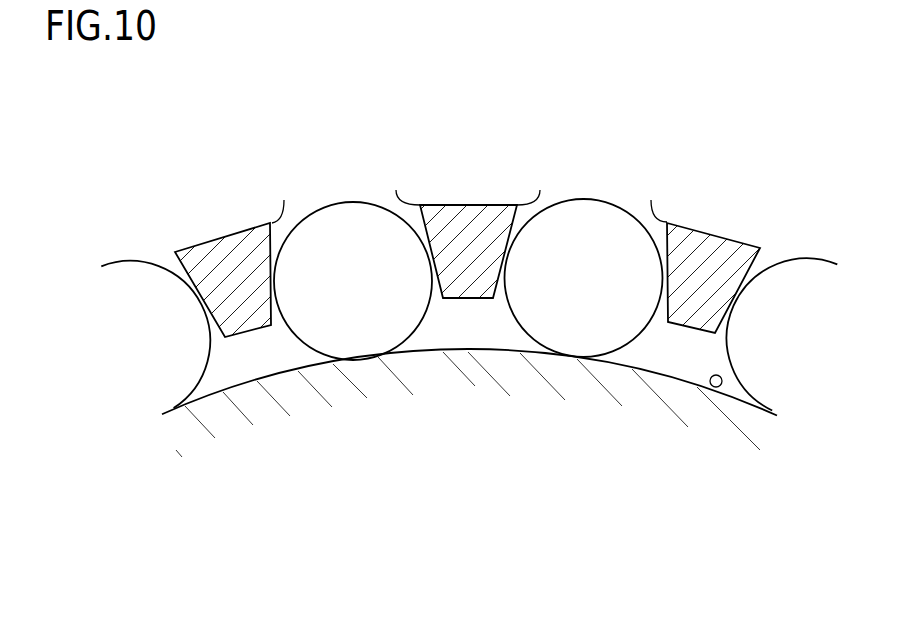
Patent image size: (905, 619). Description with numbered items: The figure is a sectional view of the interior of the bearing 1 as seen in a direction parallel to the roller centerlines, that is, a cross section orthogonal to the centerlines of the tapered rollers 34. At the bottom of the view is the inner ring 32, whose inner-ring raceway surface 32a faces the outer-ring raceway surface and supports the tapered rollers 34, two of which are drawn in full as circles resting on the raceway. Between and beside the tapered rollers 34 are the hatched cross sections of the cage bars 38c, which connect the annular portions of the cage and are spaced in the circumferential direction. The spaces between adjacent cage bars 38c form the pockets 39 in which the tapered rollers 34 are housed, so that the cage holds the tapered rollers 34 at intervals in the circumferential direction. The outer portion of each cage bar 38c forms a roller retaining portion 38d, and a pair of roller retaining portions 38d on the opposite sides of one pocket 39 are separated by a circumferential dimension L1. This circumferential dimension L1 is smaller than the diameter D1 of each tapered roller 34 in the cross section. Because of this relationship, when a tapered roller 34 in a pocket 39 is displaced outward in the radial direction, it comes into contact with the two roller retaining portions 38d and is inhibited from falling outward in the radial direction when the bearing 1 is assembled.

The rolling bearing 1 is at (183, 472).
The inner ring 32 is at (448, 367).
The inner-ring raceway surface 32a is at (713, 387).
The tapered rollers 34 is at (358, 317).
The cage bars 38c is at (215, 253).
The roller retaining portions 38d is at (284, 200).
The pockets 39 is at (298, 350).
The circumferential dimension L1 is at (418, 203).
The diameter D1 is at (431, 270).